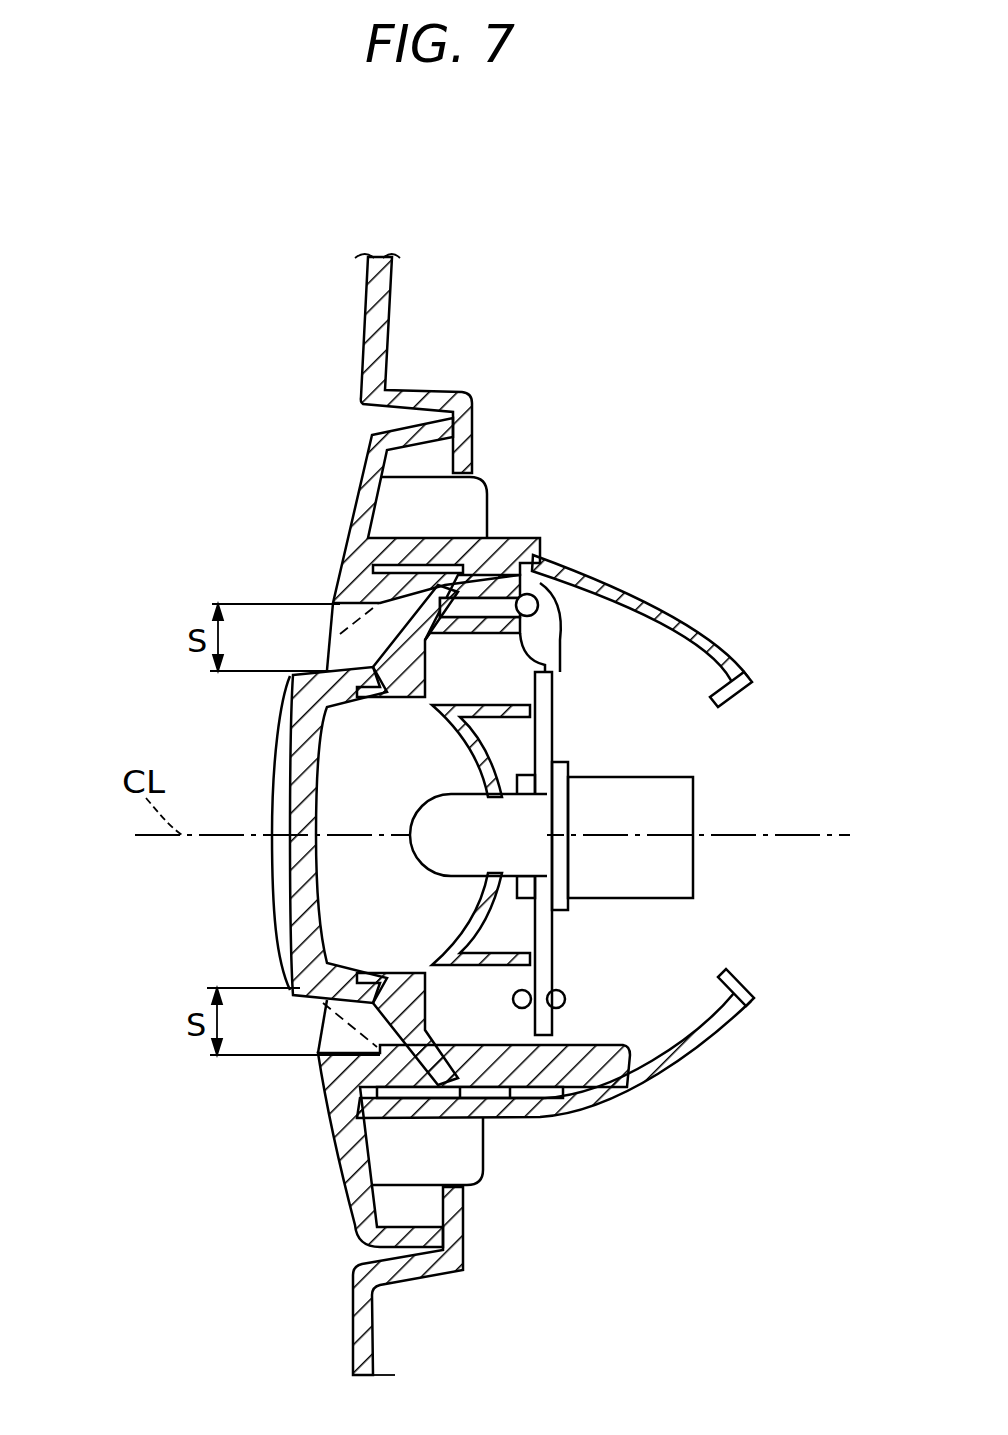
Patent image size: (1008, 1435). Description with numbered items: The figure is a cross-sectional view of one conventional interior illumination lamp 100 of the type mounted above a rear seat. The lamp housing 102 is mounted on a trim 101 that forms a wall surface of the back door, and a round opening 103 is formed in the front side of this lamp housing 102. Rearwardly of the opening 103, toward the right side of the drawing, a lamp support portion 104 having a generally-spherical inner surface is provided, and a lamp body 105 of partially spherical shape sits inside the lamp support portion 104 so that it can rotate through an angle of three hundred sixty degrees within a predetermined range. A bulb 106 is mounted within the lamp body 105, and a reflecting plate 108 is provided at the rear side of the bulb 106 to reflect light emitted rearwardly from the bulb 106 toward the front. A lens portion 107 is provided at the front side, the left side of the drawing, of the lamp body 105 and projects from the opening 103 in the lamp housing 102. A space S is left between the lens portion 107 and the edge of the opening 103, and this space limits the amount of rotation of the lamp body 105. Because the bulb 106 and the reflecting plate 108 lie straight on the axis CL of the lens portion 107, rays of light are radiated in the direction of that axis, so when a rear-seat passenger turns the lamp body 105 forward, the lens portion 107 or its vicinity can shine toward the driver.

The interior illumination lamp 100 is at (142, 396).
The trim 101 is at (368, 327).
The lamp housing 102 is at (360, 1238).
The opening 103 is at (333, 600).
The lamp support portion 104 is at (672, 606).
The lamp body 105 is at (700, 737).
The bulb 106 is at (428, 815).
The lens portion 107 is at (272, 892).
The reflecting plate 108 is at (470, 915).